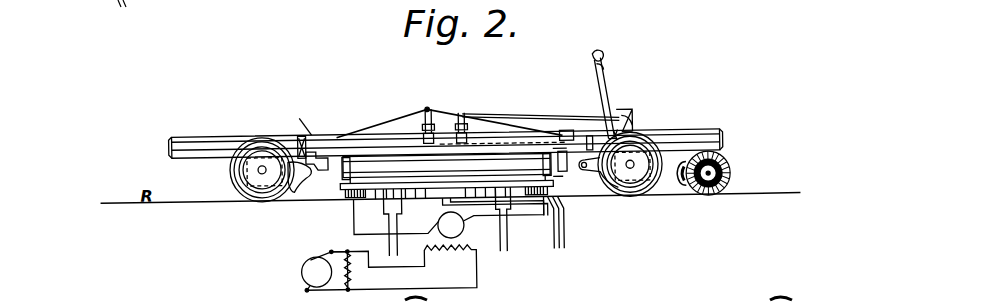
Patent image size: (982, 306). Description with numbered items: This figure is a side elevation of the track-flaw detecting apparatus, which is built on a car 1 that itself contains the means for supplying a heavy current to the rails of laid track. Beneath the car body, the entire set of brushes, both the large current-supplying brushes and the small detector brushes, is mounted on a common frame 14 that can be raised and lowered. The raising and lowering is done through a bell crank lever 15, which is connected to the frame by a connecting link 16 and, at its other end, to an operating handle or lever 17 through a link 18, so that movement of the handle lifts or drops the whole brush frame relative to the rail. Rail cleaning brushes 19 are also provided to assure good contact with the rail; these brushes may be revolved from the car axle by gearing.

The car 1 is at (319, 134).
The common frame 14 is at (446, 167).
The bell crank lever 15 is at (449, 115).
The connecting link 16 is at (447, 159).
The operating handle or lever 17 is at (604, 67).
The link 18 is at (541, 118).
The rail cleaning brushes 19 is at (716, 172).